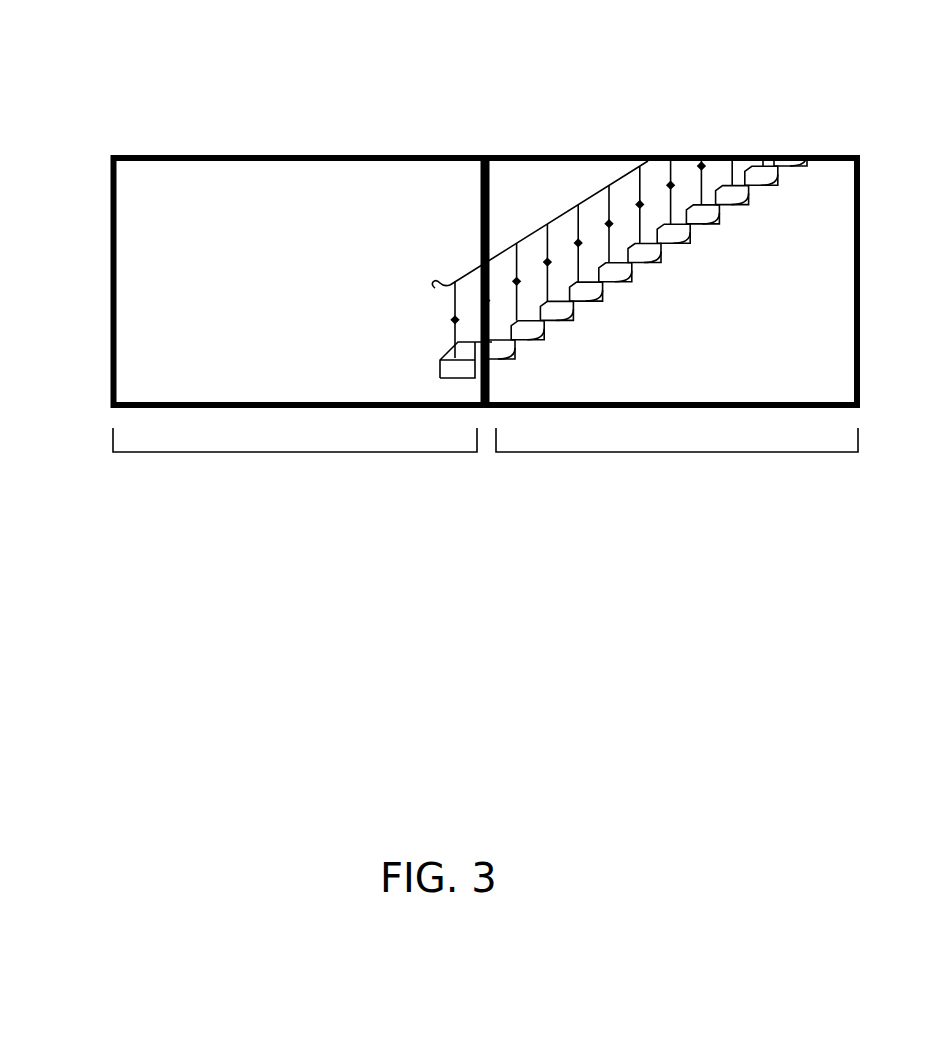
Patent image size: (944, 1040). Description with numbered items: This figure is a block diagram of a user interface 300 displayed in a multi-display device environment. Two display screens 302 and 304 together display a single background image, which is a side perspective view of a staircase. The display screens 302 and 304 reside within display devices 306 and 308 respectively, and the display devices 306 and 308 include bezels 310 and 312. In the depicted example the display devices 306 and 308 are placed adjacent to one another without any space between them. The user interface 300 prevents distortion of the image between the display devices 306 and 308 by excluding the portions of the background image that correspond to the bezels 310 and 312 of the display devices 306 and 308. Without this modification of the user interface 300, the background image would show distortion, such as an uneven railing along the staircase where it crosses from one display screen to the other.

The user interface 300 is at (438, 827).
The display screen 302 is at (307, 188).
The display screen 304 is at (557, 173).
The display device 306 is at (295, 466).
The display device 308 is at (677, 466).
The bezel 310 is at (110, 197).
The bezel 312 is at (523, 153).